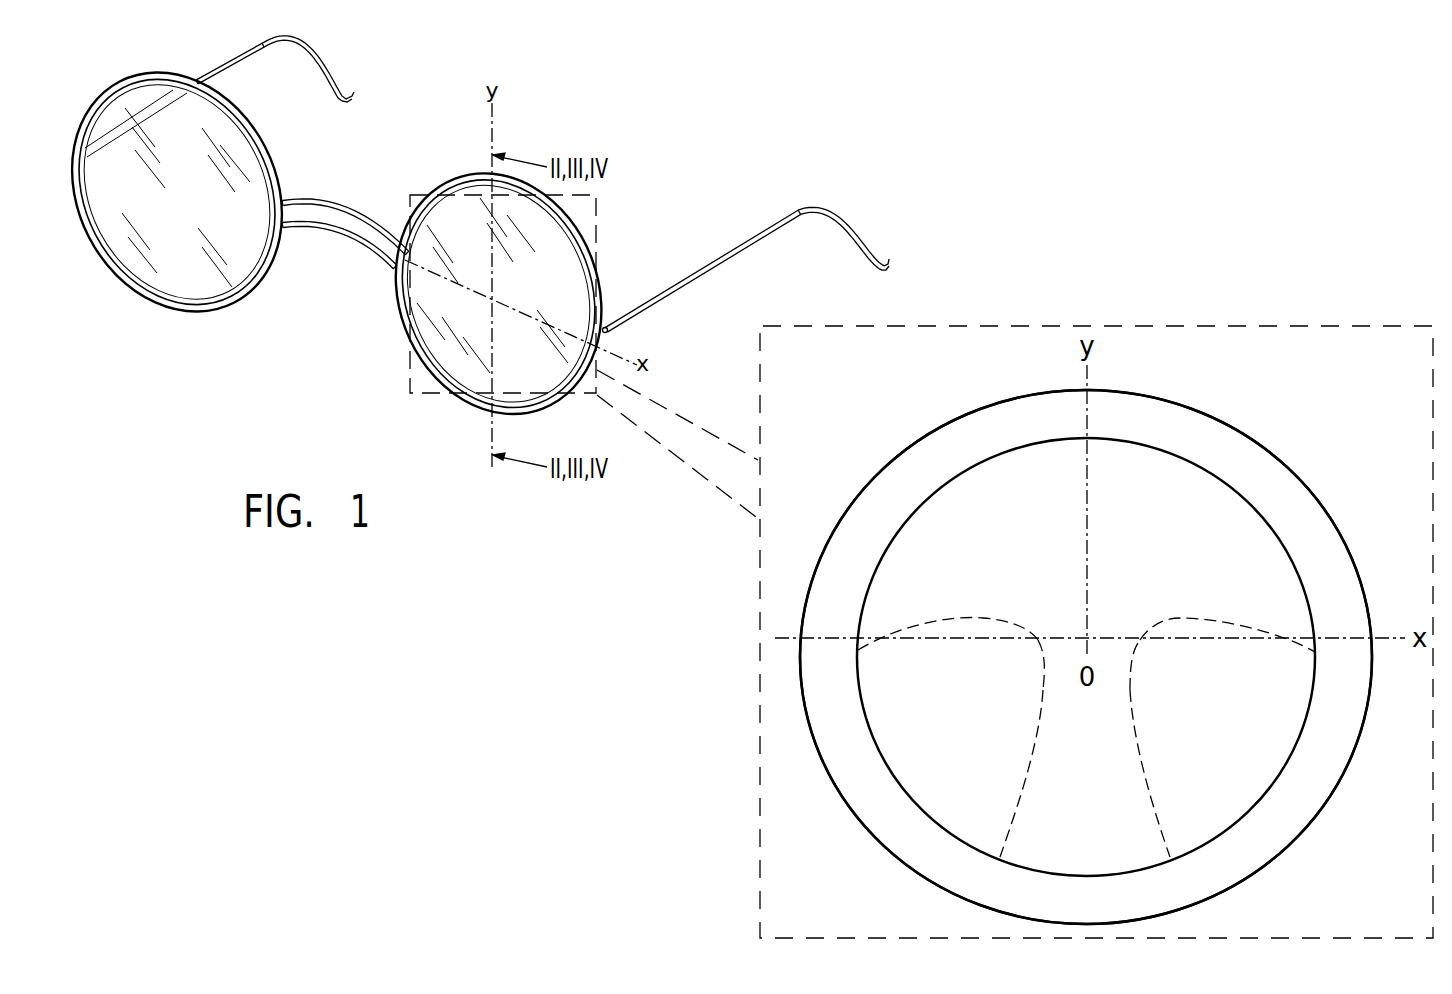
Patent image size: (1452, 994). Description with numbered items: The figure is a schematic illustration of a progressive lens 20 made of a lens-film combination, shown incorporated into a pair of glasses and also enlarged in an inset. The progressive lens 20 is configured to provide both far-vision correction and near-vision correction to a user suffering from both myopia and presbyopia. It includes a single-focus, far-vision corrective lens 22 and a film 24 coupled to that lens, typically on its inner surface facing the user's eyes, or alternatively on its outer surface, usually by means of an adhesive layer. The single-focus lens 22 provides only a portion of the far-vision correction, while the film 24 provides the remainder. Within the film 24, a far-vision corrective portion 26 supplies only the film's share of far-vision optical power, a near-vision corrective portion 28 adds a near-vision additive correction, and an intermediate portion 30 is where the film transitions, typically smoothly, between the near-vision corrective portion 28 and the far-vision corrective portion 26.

The progressive lens 20 is at (1281, 421).
The single-focus, far-vision corrective lens 22 is at (1310, 802).
The film 24 is at (1253, 531).
The far-vision corrective portion 26 is at (1156, 532).
The near-vision corrective portion 28 is at (1076, 851).
The intermediate portion 30 is at (1078, 746).